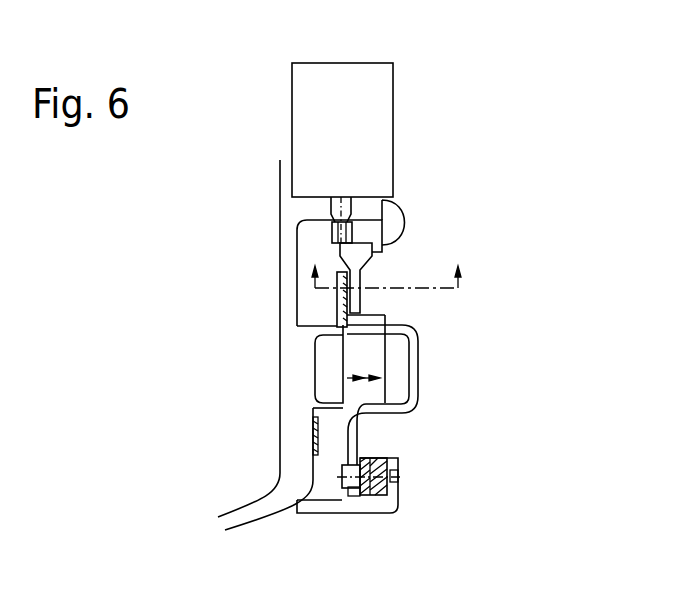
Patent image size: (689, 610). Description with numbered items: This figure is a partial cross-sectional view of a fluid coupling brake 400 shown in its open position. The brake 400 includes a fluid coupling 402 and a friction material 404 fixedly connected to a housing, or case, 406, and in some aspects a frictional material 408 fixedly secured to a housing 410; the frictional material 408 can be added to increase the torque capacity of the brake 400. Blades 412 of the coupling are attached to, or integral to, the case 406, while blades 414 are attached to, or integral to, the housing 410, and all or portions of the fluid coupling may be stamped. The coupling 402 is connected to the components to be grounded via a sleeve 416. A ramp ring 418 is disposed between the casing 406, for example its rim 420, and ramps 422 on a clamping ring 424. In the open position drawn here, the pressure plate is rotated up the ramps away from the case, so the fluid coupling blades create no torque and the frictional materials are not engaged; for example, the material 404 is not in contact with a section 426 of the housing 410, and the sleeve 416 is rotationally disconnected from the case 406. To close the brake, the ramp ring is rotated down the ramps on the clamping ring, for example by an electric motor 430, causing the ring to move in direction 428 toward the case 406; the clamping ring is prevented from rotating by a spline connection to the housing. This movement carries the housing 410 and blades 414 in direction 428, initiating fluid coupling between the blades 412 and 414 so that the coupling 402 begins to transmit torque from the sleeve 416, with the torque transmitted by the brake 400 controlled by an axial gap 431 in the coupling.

The brake 400 is at (503, 84).
The fluid coupling 402 is at (446, 344).
The friction material 404 is at (313, 432).
The housing, or case 406 is at (290, 345).
The frictional material 408 is at (345, 293).
The housing 410 is at (420, 382).
The blades 412 is at (323, 363).
The blades 414 is at (395, 363).
The sleeve 416 is at (397, 495).
The ramp ring 418 is at (385, 225).
The rim 420 is at (377, 252).
The ramps 422 is at (352, 256).
The clamping ring 424 is at (360, 310).
The section 426 is at (347, 450).
The direction 428 is at (442, 538).
The electric motor 430 is at (370, 132).
The axial gap 431 is at (347, 378).